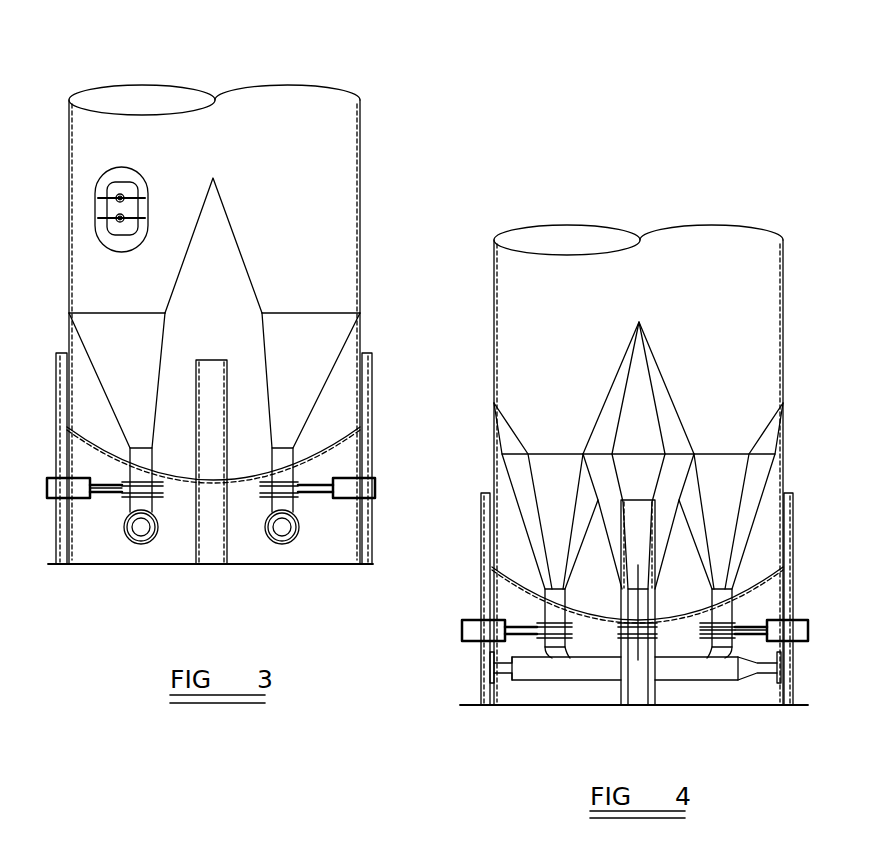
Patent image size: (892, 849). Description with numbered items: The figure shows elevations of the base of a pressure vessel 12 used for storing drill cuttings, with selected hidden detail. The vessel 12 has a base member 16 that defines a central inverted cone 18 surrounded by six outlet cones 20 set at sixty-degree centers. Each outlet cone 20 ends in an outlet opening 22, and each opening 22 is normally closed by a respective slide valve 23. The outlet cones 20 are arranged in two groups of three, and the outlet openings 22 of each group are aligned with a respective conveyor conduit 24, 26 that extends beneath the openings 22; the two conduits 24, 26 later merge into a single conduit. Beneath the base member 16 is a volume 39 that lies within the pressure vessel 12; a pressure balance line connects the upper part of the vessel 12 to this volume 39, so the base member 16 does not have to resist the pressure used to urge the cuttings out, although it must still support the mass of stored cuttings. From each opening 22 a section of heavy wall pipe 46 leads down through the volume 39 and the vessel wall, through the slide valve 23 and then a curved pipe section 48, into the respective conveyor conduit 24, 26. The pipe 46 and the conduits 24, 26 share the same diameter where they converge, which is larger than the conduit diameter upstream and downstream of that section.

In FIG. 3, the pressure vessel 12 is at (362, 157).
In FIG. 4, the pressure vessel 12 is at (786, 267).
In FIG. 3, the base member 16 is at (347, 335).
In FIG. 4, the base member 16 is at (782, 463).
In FIG. 3, the inverted cone 18 is at (207, 193).
In FIG. 4, the inverted cone 18 is at (617, 373).
In FIG. 3, the outlet cone 20 is at (97, 318).
In FIG. 4, the outlet cone 20 is at (520, 463).
In FIG. 3, the outlet opening 22 is at (327, 443).
In FIG. 3, the slide valve 23 is at (123, 496).
In FIG. 4, the slide valve 23 is at (733, 647).
In FIG. 3, the conveyor conduit 24 is at (141, 544).
In FIG. 3, the conveyor conduit 26 is at (284, 544).
In FIG. 4, the conveyor conduit 26 is at (718, 682).
In FIG. 3, the volume 39 is at (213, 437).
In FIG. 4, the volume 39 is at (507, 515).
In FIG. 3, the heavy wall pipe 46 is at (290, 507).
In FIG. 4, the heavy wall pipe 46 is at (728, 612).
In FIG. 4, the curved pipe section 48 is at (557, 650).